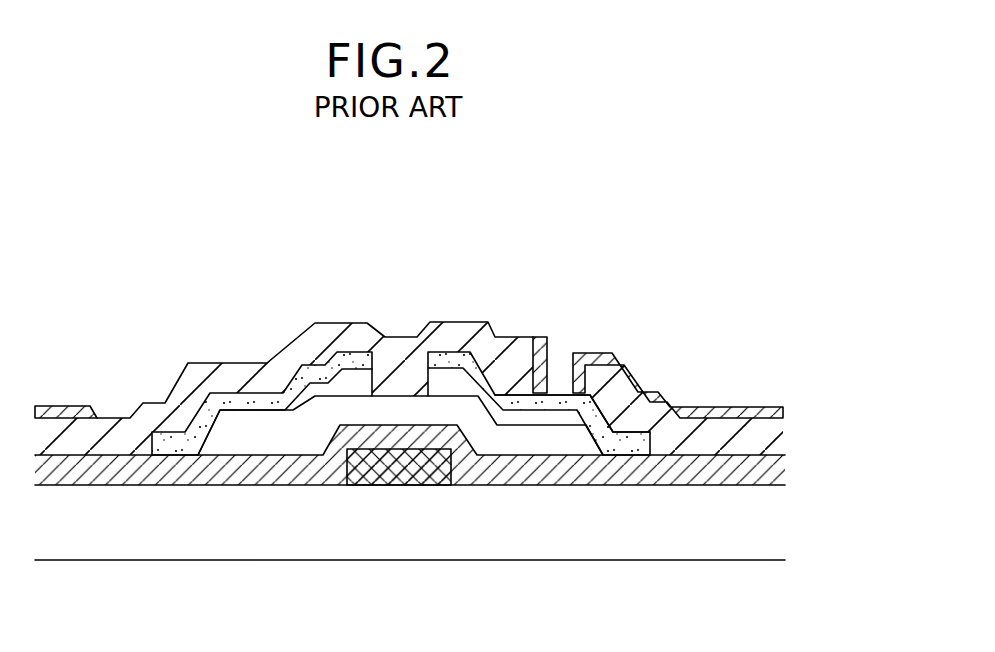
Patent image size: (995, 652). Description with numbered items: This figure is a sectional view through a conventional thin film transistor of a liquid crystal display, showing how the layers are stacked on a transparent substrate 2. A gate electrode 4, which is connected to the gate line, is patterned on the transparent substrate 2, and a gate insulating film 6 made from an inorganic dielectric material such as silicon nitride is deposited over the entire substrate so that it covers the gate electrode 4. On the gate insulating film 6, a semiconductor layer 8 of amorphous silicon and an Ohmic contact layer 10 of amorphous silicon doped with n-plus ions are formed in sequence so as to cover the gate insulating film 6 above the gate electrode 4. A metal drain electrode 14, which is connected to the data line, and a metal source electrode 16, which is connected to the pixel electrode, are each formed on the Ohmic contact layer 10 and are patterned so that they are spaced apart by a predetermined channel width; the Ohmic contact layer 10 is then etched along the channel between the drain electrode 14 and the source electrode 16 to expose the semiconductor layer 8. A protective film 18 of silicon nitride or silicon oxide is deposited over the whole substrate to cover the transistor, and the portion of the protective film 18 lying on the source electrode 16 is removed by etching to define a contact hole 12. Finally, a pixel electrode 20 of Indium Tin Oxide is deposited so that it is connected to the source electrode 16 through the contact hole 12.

The transparent substrate 2 is at (778, 512).
The gate electrode 4 is at (377, 485).
The gate insulating film 6 is at (778, 467).
The semiconductor layer 8 is at (553, 367).
The Ohmic contact layer 10 is at (503, 396).
The contact hole 12 is at (517, 438).
The drain electrode 14 is at (218, 400).
The source electrode 16 is at (470, 362).
The protective film 18 is at (305, 344).
The pixel electrode 20 is at (660, 392).